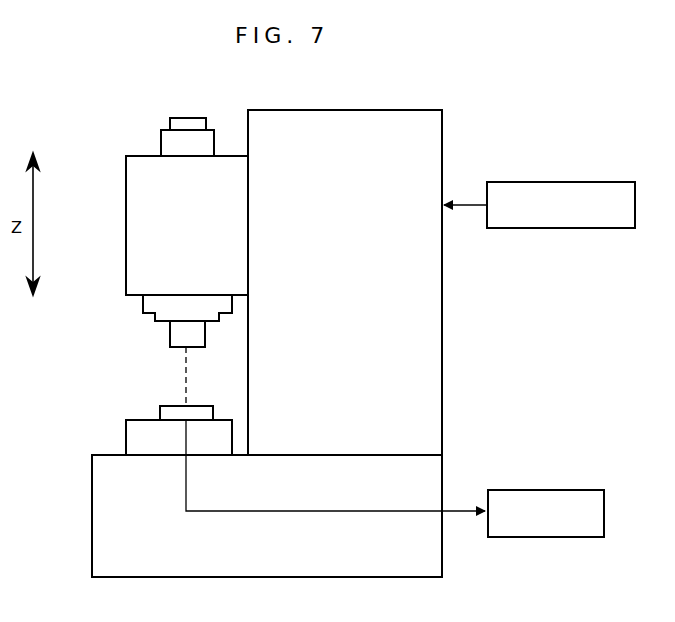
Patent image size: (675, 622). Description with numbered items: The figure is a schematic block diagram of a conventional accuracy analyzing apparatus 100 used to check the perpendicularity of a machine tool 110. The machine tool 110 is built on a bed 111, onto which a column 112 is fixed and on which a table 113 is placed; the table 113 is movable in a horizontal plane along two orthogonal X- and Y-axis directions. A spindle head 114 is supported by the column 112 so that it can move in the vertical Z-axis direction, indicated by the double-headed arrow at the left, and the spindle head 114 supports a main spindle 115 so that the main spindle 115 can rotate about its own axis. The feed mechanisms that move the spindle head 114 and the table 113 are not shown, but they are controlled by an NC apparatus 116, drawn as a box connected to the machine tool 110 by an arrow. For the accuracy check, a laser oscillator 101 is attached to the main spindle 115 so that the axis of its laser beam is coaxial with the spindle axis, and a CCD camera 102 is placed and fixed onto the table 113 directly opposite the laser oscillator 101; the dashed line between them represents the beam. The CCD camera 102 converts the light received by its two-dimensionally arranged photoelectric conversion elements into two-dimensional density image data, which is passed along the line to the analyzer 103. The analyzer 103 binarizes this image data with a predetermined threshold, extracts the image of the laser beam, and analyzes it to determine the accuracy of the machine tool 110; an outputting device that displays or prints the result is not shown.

The accuracy analyzing apparatus 100 is at (616, 578).
The laser oscillator 101 is at (170, 330).
The CCD camera 102 is at (162, 410).
The analyzer 103 is at (538, 490).
The machine tool 110 is at (316, 343).
The bed 111 is at (440, 562).
The column 112 is at (435, 337).
The table 113 is at (130, 433).
The spindle head 114 is at (128, 252).
The main spindle 115 is at (143, 300).
The NC apparatus 116 is at (543, 228).